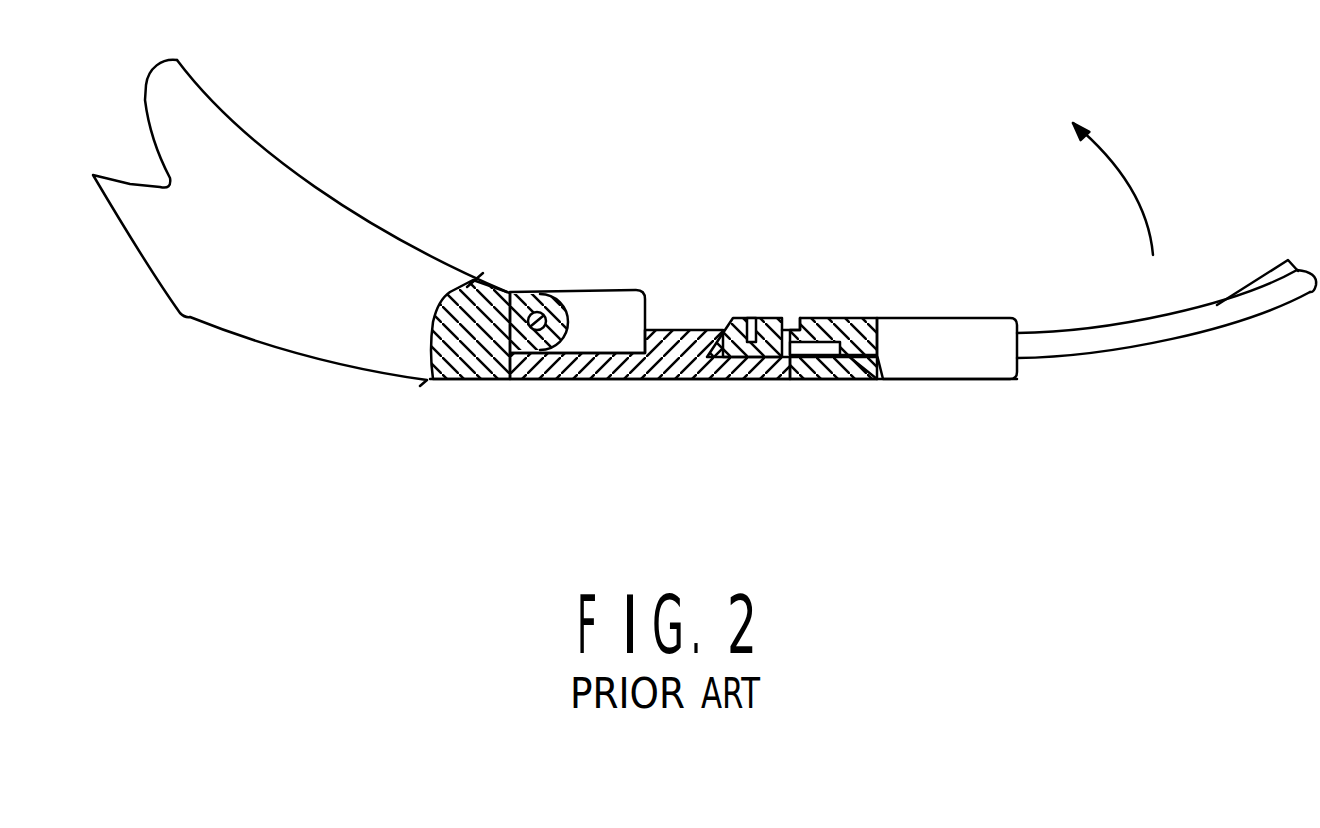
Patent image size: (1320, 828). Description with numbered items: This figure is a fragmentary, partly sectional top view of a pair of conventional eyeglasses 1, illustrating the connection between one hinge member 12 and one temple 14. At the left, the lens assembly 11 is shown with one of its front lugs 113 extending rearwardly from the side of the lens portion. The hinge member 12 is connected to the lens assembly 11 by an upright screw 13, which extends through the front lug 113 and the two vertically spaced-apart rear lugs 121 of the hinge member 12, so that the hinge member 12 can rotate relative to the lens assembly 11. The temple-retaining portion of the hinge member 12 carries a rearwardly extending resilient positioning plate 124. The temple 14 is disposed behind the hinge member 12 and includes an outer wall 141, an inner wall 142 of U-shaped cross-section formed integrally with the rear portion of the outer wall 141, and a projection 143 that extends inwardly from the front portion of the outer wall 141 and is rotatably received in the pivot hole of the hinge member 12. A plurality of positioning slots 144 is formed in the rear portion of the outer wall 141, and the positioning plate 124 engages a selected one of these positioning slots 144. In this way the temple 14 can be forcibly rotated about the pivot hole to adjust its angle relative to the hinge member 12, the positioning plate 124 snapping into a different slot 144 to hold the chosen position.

The conventional eyeglasses 1 is at (489, 240).
The lens assembly 11 is at (433, 386).
The hinge member 12 is at (650, 383).
The upright screw 13 is at (552, 310).
The front lug 113 is at (557, 308).
The rear lug 121 is at (612, 315).
The resilient positioning plate 124 is at (840, 343).
The temple 14 is at (939, 382).
The outer wall 141 is at (813, 367).
The inner wall 142 is at (842, 318).
The projection 143 is at (763, 318).
The positioning slots 144 is at (841, 358).